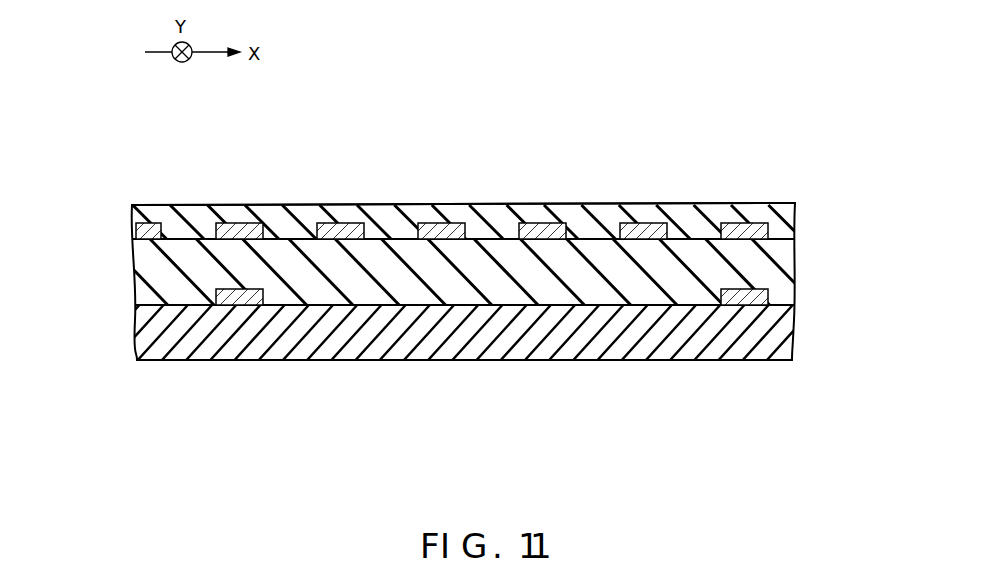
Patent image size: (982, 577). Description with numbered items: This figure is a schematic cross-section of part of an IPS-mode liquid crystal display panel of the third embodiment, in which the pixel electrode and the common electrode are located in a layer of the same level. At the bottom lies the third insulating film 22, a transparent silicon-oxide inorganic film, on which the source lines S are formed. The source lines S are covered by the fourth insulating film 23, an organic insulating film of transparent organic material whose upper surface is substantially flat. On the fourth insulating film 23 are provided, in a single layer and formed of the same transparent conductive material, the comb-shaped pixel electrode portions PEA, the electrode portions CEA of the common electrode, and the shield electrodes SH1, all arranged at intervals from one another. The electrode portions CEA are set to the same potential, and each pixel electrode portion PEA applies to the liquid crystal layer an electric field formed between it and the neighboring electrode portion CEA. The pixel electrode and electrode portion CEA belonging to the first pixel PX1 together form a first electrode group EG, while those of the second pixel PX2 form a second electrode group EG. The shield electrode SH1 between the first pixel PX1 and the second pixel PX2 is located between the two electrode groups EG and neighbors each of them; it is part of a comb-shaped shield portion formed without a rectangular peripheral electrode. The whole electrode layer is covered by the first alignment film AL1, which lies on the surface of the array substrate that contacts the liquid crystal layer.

The pixel electrode portion PEA is at (640, 222).
The electrode group EG is at (672, 145).
The shield electrode SH1 is at (240, 222).
The electrode portion CEA is at (540, 222).
The first alignment film AL1 is at (688, 213).
The fourth insulating film 23 is at (789, 258).
The third insulating film 22 is at (793, 328).
The source line S is at (240, 302).
The first pixel PX1 is at (463, 381).
The second pixel PX2 is at (151, 381).